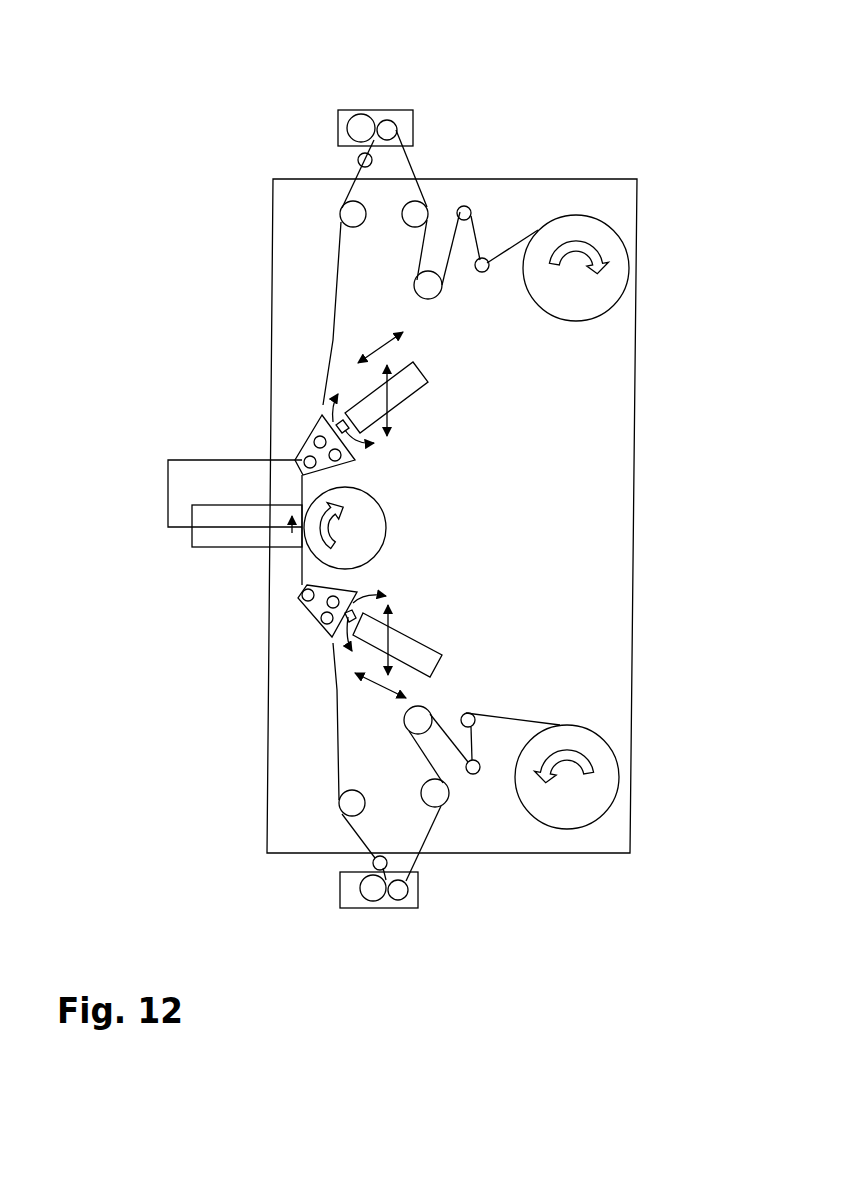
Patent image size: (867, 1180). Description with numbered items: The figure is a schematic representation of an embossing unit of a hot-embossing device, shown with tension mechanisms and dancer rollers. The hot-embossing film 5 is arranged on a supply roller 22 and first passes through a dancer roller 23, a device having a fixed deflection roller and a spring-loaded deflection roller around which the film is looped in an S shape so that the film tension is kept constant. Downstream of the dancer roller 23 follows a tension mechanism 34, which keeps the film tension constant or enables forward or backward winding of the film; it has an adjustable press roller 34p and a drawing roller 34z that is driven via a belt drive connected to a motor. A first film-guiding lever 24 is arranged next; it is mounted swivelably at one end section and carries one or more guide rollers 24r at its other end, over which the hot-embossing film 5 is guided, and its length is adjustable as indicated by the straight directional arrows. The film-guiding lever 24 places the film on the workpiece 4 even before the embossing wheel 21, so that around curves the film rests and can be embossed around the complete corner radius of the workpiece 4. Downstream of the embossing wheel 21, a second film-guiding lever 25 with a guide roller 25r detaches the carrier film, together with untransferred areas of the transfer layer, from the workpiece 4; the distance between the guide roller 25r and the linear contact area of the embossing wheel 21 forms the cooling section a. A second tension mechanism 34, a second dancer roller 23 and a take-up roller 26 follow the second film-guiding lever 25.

The workpiece 4 is at (243, 549).
The hot-embossing film 5 is at (336, 745).
The embossing wheel 21 is at (389, 528).
The supply roller 22 is at (622, 777).
The dancer roller 23 is at (484, 256).
The first film-guiding lever 24 is at (408, 626).
The guide roller 24r is at (297, 602).
The second film-guiding lever 25 is at (397, 412).
The guide roller 25r is at (299, 456).
The take-up roller 26 is at (632, 268).
The tension mechanism 34 is at (335, 127).
The press roller 34p is at (359, 112).
The drawing roller 34z is at (386, 118).
The cooling section a is at (222, 493).